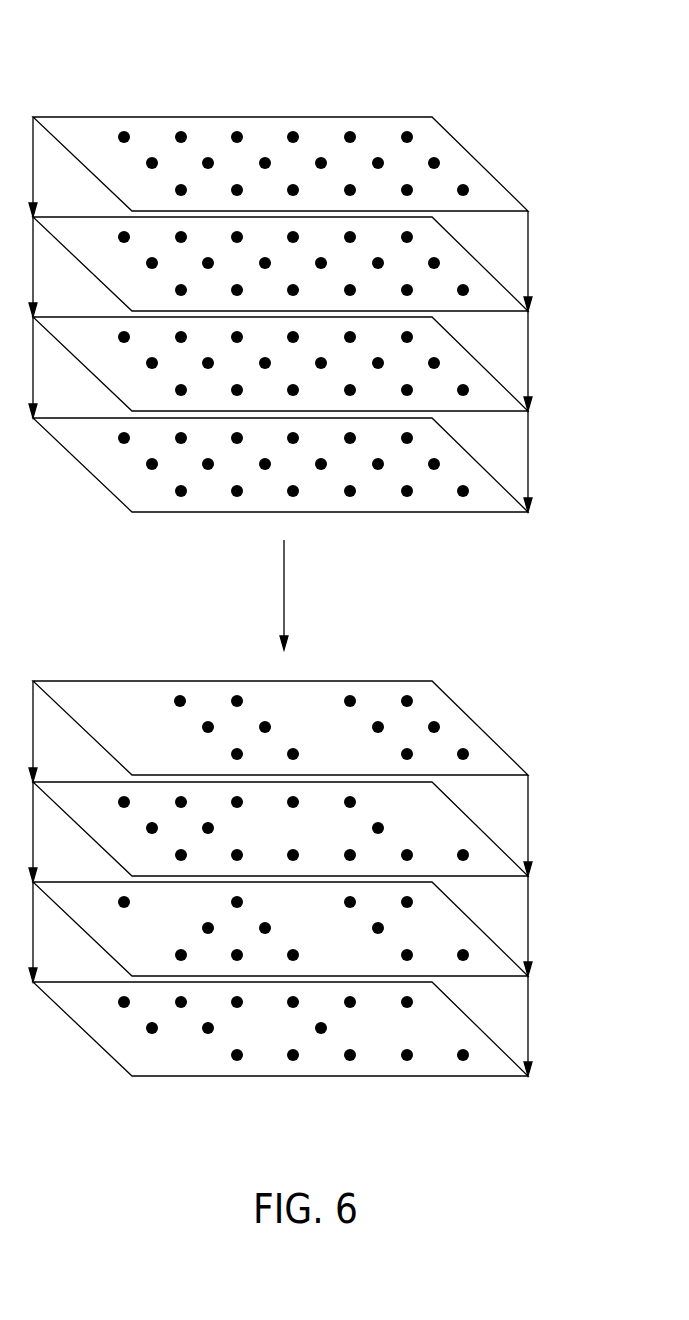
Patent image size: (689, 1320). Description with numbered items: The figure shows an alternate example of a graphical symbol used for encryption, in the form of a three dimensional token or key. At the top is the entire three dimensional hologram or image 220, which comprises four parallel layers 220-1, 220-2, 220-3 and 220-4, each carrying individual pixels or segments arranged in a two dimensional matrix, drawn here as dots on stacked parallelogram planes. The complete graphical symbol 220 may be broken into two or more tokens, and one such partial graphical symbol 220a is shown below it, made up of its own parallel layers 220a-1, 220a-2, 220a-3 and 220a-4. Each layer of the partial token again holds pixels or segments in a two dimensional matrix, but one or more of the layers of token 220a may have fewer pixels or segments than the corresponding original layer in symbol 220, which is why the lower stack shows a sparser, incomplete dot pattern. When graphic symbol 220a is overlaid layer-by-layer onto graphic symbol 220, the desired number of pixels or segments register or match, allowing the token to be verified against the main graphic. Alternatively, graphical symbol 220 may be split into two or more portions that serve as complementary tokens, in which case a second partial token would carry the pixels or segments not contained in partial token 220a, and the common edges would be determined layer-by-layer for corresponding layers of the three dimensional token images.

The three dimensional hologram or image 220 is at (306, 259).
The partial graphical symbol 220a is at (311, 823).
The parallel layer 220-1 is at (507, 492).
The parallel layer 220-2 is at (507, 391).
The parallel layer 220-3 is at (507, 291).
The parallel layer 220-4 is at (507, 190).
The parallel layer 220a-1 is at (507, 1056).
The parallel layer 220a-2 is at (507, 956).
The parallel layer 220a-3 is at (507, 856).
The parallel layer 220a-4 is at (507, 756).